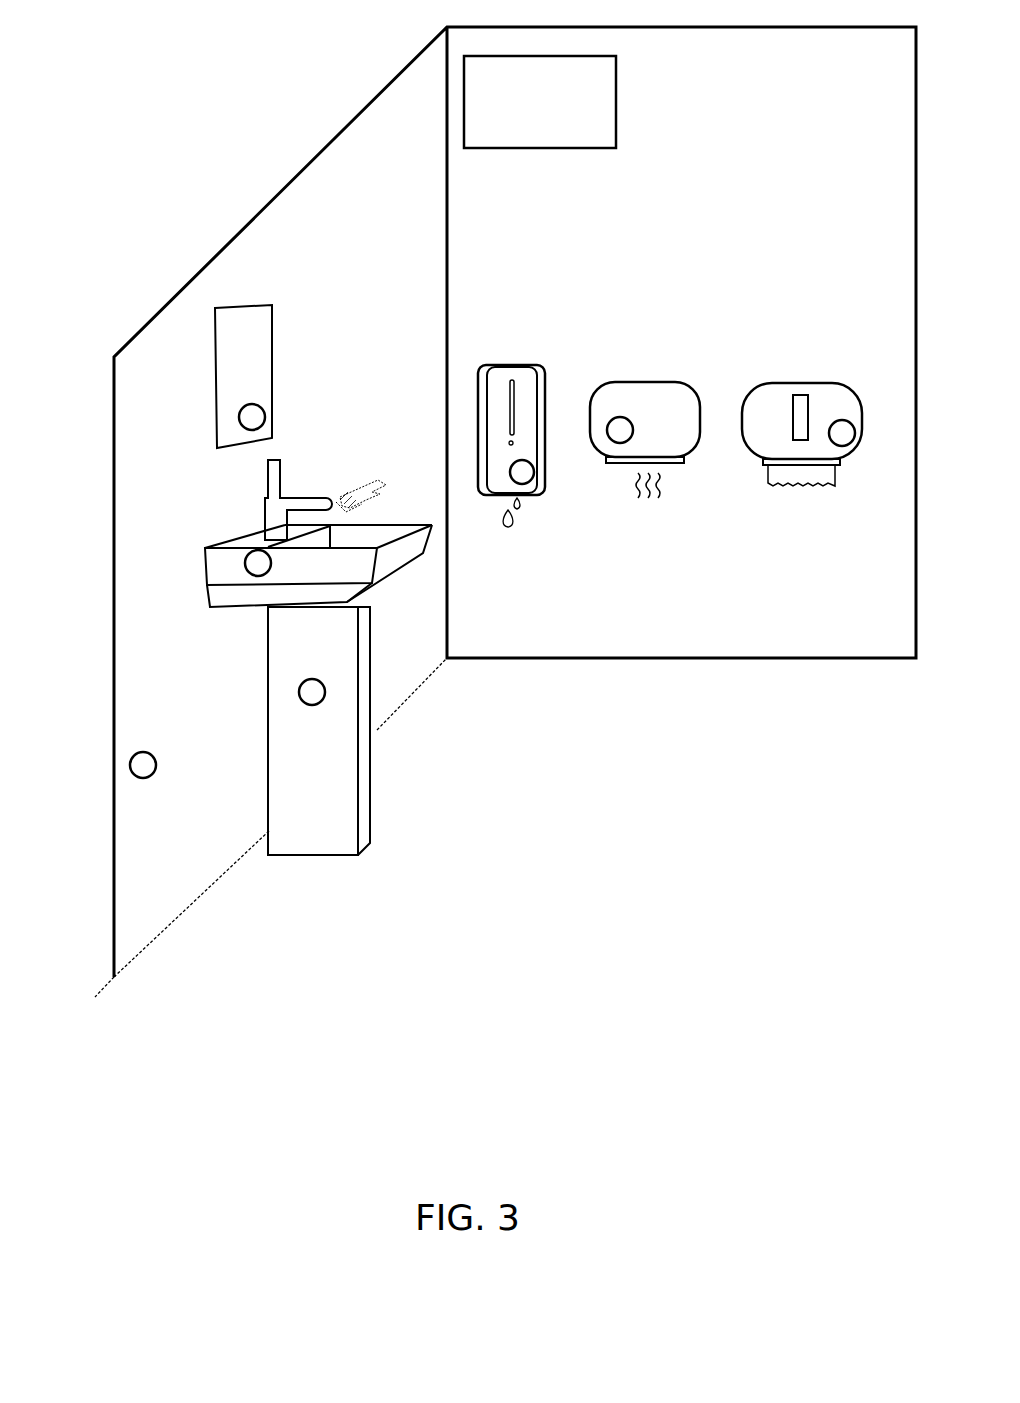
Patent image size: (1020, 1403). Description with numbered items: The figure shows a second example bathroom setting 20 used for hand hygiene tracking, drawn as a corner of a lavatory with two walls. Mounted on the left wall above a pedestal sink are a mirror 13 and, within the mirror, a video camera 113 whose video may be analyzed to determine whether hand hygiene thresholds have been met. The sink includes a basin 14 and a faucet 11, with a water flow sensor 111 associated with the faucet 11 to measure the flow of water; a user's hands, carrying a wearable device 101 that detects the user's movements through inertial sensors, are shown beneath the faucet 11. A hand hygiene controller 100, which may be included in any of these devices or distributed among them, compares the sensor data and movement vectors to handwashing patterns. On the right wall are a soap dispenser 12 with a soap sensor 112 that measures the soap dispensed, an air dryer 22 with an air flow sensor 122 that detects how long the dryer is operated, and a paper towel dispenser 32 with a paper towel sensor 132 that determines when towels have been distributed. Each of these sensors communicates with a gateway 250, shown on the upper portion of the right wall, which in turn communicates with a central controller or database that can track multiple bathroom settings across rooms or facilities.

The bathroom setting 20 is at (110, 29).
The gateway 250 is at (157, 803).
The mirror 13 is at (237, 306).
The video camera 113 is at (263, 421).
The faucet 11 is at (265, 512).
The wearable device 101 is at (383, 485).
The basin 14 is at (215, 600).
The water flow sensor 111 is at (246, 561).
The hand hygiene controller 100 is at (318, 703).
The soap dispenser 12 is at (515, 365).
The soap sensor 112 is at (533, 477).
The air dryer 22 is at (637, 382).
The air flow sensor 122 is at (633, 427).
The paper towel dispenser 32 is at (770, 383).
The paper towel sensor 132 is at (850, 443).